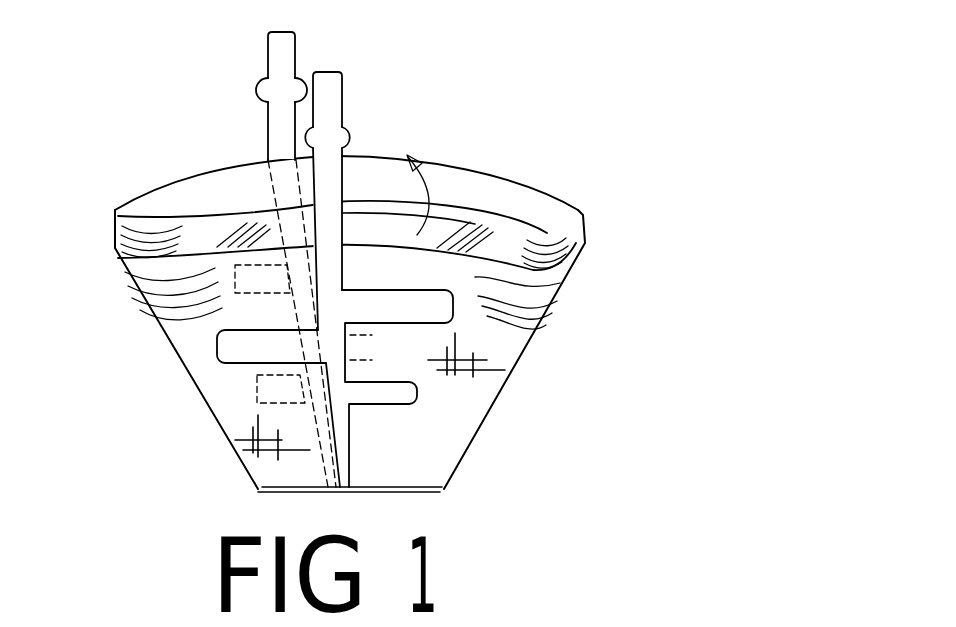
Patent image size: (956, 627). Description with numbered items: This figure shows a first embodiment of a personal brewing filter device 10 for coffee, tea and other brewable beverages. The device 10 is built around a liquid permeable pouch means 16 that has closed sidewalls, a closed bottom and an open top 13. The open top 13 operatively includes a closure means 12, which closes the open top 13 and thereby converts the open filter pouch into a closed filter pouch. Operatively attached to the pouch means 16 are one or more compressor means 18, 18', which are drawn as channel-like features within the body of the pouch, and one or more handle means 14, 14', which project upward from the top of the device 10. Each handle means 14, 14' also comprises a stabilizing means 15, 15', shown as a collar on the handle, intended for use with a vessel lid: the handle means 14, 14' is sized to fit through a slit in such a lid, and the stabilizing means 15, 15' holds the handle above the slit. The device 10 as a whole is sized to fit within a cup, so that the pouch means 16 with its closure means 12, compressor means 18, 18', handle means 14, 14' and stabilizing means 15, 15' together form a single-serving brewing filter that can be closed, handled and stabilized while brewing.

The personal brewing filter device 10 is at (536, 428).
The closure means 12 is at (570, 233).
The open top 13 is at (228, 213).
The handle means 14 is at (395, 180).
The handle means 14' is at (228, 246).
The stabilizing means 15 is at (439, 125).
The stabilizing means 15' is at (231, 118).
The liquid permeable pouch means 16 is at (495, 332).
The compressor means 18 is at (269, 388).
The compressor means 18' is at (184, 334).